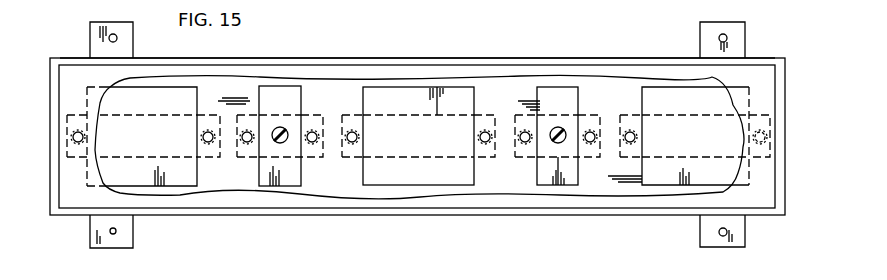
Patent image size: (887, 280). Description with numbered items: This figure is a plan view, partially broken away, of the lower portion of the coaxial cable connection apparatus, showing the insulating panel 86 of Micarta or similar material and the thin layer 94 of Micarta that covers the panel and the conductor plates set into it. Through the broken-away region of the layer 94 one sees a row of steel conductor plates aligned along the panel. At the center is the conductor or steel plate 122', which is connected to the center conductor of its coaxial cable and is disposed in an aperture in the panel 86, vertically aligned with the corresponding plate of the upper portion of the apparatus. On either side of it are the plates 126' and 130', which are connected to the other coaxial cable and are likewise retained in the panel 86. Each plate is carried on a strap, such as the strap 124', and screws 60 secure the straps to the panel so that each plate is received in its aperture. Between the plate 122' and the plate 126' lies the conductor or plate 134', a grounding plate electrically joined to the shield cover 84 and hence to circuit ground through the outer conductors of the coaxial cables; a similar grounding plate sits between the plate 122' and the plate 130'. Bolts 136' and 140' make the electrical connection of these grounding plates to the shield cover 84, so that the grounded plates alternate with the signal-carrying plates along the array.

The screws 60 is at (247, 143).
The shield cover 84 is at (592, 60).
The panel 86 is at (237, 87).
The thin layer 94 is at (296, 72).
The conductor or steel plate 122' is at (396, 136).
The terminal strip 124' is at (513, 108).
The plate 126' is at (142, 113).
The plate 130' is at (678, 108).
The conductor or plate 134' is at (306, 136).
The mounting screw 136' is at (281, 116).
The mounting screw 140' is at (581, 136).